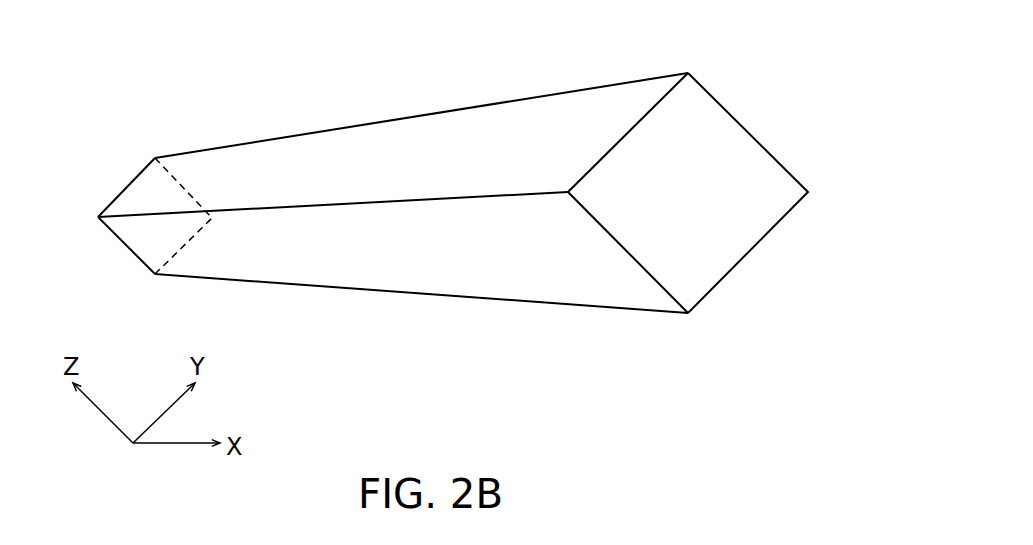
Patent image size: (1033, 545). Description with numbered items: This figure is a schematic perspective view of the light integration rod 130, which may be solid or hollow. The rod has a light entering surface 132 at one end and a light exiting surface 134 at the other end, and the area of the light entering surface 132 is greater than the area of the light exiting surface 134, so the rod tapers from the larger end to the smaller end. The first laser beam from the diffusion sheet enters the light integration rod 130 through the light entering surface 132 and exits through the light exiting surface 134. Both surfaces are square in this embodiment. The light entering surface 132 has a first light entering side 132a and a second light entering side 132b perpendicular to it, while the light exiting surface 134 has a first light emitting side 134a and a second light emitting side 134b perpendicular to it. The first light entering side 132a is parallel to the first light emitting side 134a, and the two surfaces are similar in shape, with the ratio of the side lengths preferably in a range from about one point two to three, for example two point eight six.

The light integration rod 130 is at (442, 225).
The light entering surface 132 is at (688, 203).
The first light entering side 132a is at (628, 132).
The second light entering side 132b is at (623, 252).
The light exiting surface 134 is at (144, 207).
The first light emitting side 134a is at (125, 188).
The second light emitting side 134b is at (123, 245).